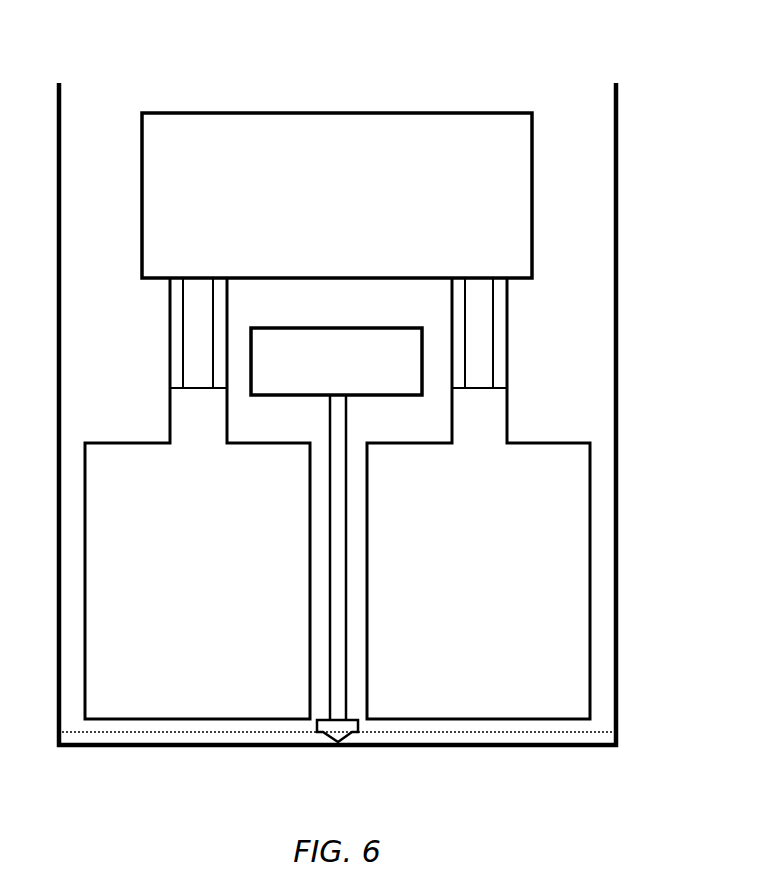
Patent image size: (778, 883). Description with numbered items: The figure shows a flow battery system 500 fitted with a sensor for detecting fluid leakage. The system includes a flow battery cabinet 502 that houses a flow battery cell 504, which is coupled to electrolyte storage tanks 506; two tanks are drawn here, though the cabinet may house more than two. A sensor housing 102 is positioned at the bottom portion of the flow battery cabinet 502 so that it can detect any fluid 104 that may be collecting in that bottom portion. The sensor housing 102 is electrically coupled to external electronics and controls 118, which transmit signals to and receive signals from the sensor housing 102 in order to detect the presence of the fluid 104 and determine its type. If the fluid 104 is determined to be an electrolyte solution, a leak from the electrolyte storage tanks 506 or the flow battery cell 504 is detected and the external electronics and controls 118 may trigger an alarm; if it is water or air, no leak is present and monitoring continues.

The flow battery system 500 is at (321, 36).
The flow battery cabinet 502 is at (616, 180).
The flow battery cell 504 is at (321, 217).
The electrolyte storage tanks 506 is at (182, 601).
The external electronics and controls 118 is at (396, 328).
The sensor housing 102 is at (338, 745).
The fluid 104 is at (484, 732).